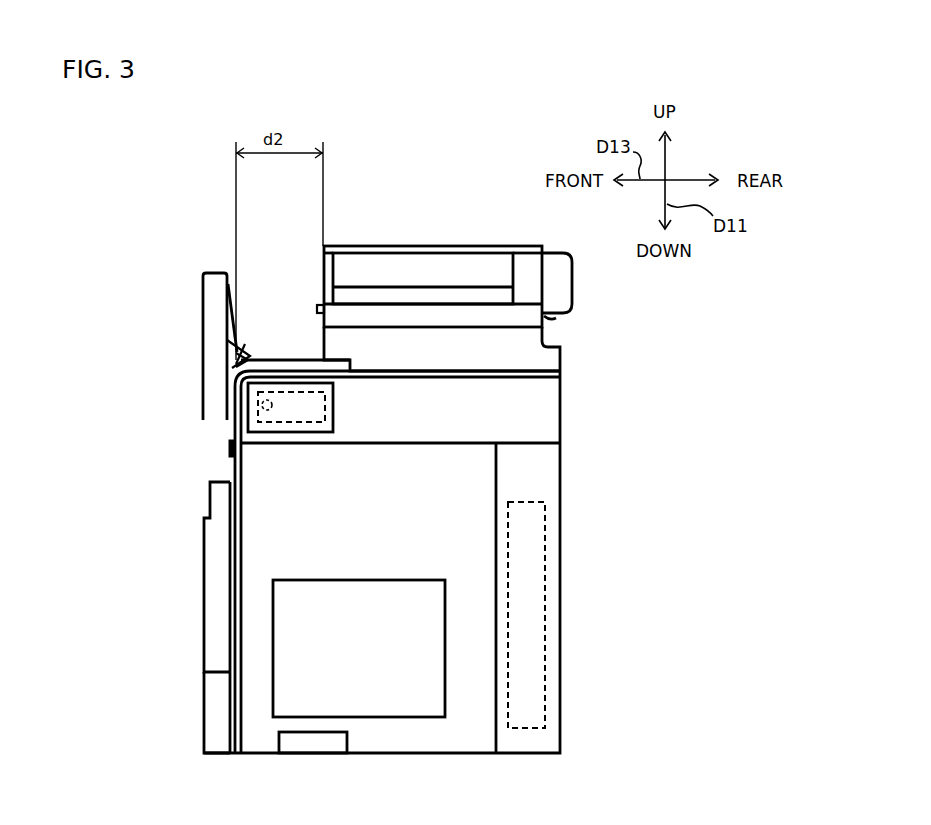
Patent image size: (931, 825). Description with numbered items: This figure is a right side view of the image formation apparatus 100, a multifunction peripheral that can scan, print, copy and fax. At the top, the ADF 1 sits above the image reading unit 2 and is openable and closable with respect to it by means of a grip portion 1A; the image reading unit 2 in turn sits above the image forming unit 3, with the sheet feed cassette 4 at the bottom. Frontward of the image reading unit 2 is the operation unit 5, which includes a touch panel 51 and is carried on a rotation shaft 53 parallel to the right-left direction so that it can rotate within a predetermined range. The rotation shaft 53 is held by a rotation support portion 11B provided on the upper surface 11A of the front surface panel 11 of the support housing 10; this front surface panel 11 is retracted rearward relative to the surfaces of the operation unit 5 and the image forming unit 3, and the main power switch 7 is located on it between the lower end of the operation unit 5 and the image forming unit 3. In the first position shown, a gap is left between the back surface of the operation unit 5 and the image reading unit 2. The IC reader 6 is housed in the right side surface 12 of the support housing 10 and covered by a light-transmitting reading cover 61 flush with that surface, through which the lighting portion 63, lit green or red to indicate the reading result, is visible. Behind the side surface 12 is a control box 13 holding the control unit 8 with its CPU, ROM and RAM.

The image formation apparatus 100 is at (148, 214).
The ADF 1 is at (398, 245).
The grip portion 1A is at (318, 306).
The image reading unit 2 is at (565, 353).
The image forming unit 3 is at (204, 570).
The sheet feed cassette 4 is at (204, 720).
The operation unit 5 is at (162, 338).
The touch panel 51 is at (204, 290).
The rotation shaft 53 is at (233, 355).
The IC reader 6 is at (333, 394).
The reading cover 61 is at (334, 424).
The lighting portion 63 is at (261, 406).
The main power switch 7 is at (229, 448).
The control unit 8 is at (545, 530).
The support housing 10 is at (560, 618).
The front surface panel 11 is at (234, 470).
The upper surface 11A is at (318, 354).
The rotation support portion 11B is at (250, 356).
The right side surface 12 is at (381, 507).
The control box 13 is at (530, 463).